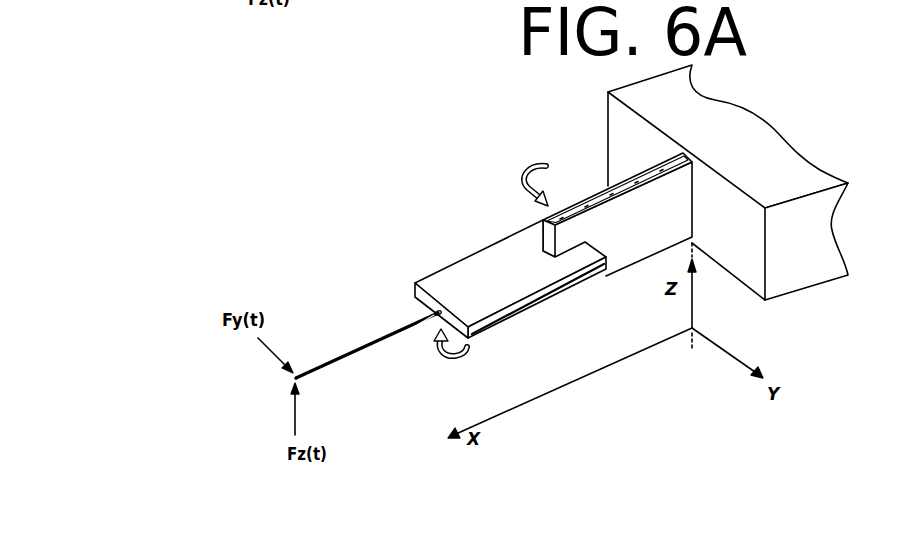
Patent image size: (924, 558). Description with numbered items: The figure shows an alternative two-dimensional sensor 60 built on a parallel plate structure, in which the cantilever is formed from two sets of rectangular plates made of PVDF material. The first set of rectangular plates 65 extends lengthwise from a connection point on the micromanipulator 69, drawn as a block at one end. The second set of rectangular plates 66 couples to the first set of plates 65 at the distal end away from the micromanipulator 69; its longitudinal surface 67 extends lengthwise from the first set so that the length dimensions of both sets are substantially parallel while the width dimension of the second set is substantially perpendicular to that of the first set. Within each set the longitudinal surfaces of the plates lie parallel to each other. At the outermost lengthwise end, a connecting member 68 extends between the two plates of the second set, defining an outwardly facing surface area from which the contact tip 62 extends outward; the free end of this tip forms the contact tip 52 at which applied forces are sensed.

The contact tip 52 is at (288, 380).
The 2-D sensor 60 is at (405, 162).
The contact tip 62 is at (328, 366).
The first set of rectangular plates 65 is at (618, 277).
The second set of rectangular plates 66 is at (527, 315).
The longitudinal surface 67 is at (529, 266).
The connecting member 68 is at (412, 293).
The micromanipulator 69 is at (836, 230).